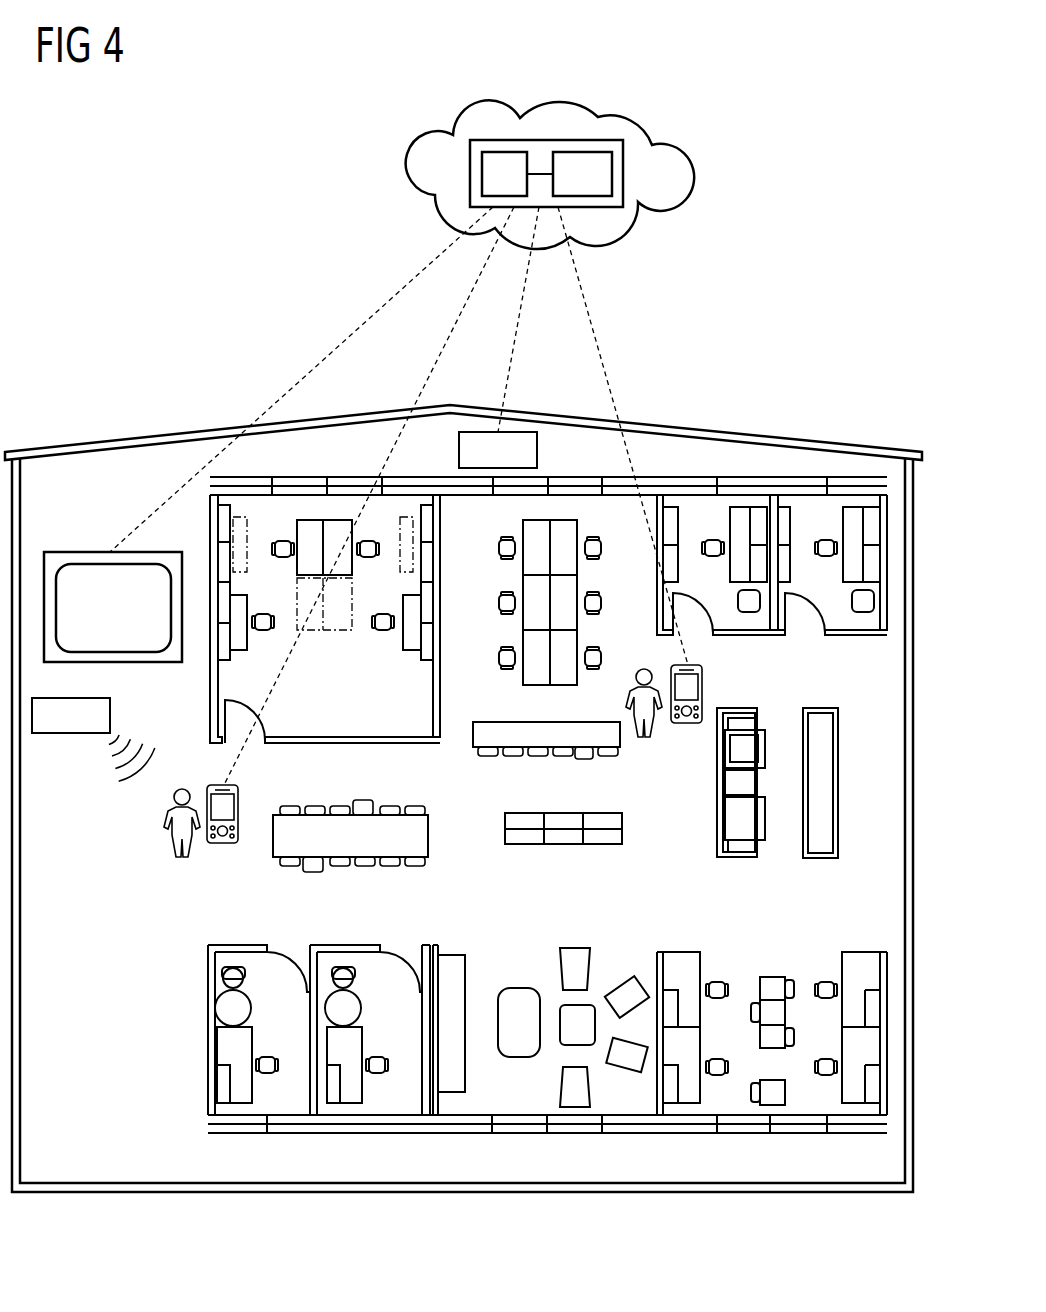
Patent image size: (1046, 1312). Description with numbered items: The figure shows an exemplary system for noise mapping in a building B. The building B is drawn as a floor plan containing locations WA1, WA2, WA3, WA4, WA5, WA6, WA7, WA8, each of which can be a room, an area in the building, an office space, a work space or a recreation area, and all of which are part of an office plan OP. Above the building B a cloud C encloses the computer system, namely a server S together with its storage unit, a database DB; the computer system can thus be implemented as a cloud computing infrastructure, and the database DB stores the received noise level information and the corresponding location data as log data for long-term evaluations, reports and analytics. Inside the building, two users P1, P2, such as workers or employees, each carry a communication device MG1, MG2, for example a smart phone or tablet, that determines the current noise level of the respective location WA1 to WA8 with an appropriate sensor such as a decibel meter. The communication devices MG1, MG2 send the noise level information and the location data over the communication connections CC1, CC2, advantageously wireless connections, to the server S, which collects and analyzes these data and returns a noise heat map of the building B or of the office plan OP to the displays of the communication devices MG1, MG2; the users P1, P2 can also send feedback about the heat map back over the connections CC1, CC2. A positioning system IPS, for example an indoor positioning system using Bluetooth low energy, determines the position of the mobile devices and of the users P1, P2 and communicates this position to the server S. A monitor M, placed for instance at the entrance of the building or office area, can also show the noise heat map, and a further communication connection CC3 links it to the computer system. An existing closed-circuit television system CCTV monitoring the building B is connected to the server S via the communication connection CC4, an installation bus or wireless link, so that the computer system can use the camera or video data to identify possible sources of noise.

The cloud C is at (693, 175).
The server S is at (507, 152).
The database DB is at (587, 152).
The communication connection CC1 is at (418, 397).
The communication connection CC2 is at (592, 318).
The communication connection CC3 is at (358, 330).
The communication connection CC4 is at (510, 378).
The closed-circuit television CCTV is at (481, 432).
The building B is at (815, 440).
The monitor M is at (90, 552).
The positioning system IPS is at (52, 733).
The person P1 is at (170, 840).
The communication device MG1 is at (218, 843).
The person P2 is at (636, 748).
The communication device MG2 is at (690, 723).
The location WA1 is at (293, 955).
The location WA2 is at (405, 955).
The location WA3 is at (522, 955).
The location WA4 is at (742, 955).
The location WA5 is at (834, 607).
The location WA6 is at (724, 607).
The location WA7 is at (468, 697).
The location WA8 is at (290, 705).
The office plan OP is at (208, 1108).